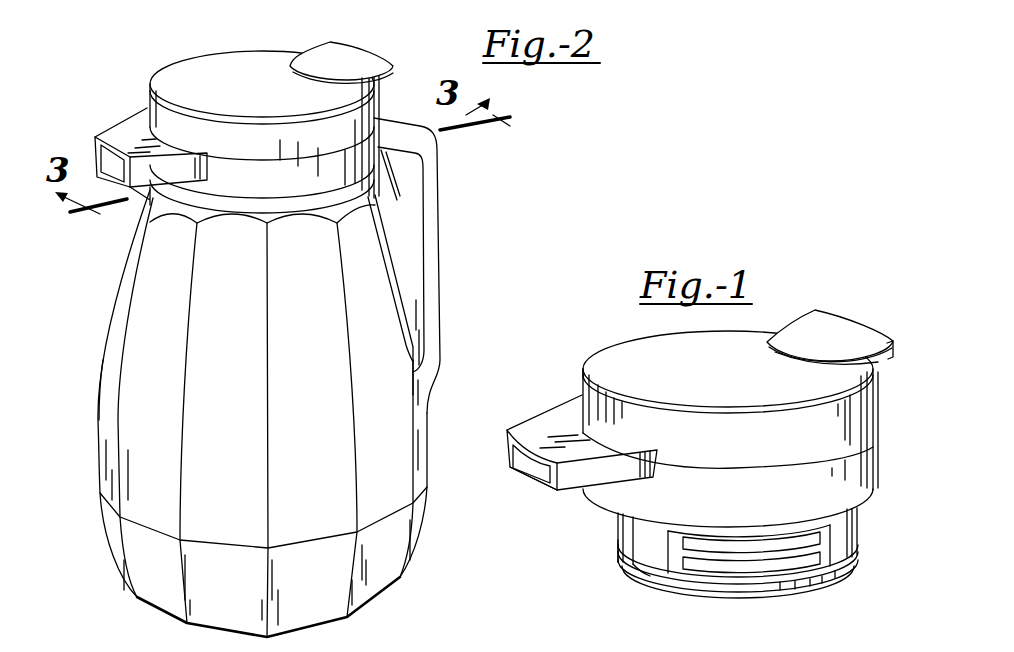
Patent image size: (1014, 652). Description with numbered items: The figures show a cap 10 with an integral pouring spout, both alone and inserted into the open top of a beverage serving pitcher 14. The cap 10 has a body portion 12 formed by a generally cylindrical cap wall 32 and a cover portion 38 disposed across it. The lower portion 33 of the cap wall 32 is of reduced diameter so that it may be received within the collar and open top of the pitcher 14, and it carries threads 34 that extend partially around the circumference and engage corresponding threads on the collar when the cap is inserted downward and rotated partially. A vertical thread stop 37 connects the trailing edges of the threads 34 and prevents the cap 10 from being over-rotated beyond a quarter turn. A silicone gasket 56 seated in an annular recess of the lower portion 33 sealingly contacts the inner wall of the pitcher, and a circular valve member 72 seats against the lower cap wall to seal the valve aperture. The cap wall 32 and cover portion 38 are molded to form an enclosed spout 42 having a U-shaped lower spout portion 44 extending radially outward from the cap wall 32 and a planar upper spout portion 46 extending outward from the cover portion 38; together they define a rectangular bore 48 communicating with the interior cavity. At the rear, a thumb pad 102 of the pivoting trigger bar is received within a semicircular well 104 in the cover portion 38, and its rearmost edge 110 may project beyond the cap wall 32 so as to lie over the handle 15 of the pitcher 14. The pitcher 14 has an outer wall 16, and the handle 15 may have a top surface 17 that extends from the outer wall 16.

In FIG. 1, the cap 10 is at (622, 323).
In FIG. 2, the body portion 12 is at (267, 67).
In FIG. 1, the body portion 12 is at (886, 445).
In FIG. 2, the pitcher 14 is at (375, 603).
In FIG. 2, the handle 15 is at (438, 222).
In FIG. 2, the outer wall 16 is at (107, 373).
In FIG. 2, the top surface 17 is at (390, 122).
In FIG. 2, the cap wall 32 is at (377, 103).
In FIG. 1, the cap wall 32 is at (880, 392).
In FIG. 1, the lower portion 33 is at (825, 578).
In FIG. 1, the threads 34 is at (641, 563).
In FIG. 1, the vertical thread stop 37 is at (856, 546).
In FIG. 2, the cover portion 38 is at (200, 68).
In FIG. 1, the cover portion 38 is at (635, 357).
In FIG. 2, the spout 42 is at (113, 113).
In FIG. 1, the spout 42 is at (581, 505).
In FIG. 2, the lower spout portion 44 is at (148, 225).
In FIG. 1, the lower spout portion 44 is at (540, 493).
In FIG. 2, the upper spout portion 46 is at (137, 123).
In FIG. 1, the upper spout portion 46 is at (553, 417).
In FIG. 2, the rectangular bore 48 is at (97, 137).
In FIG. 1, the rectangular bore 48 is at (507, 468).
In FIG. 1, the silicone gasket 56 is at (617, 555).
In FIG. 1, the valve member 72 is at (750, 600).
In FIG. 2, the thumb pad 102 is at (358, 55).
In FIG. 1, the thumb pad 102 is at (833, 319).
In FIG. 1, the semicircular well 104 is at (803, 363).
In FIG. 1, the rearmost edge 110 is at (893, 345).